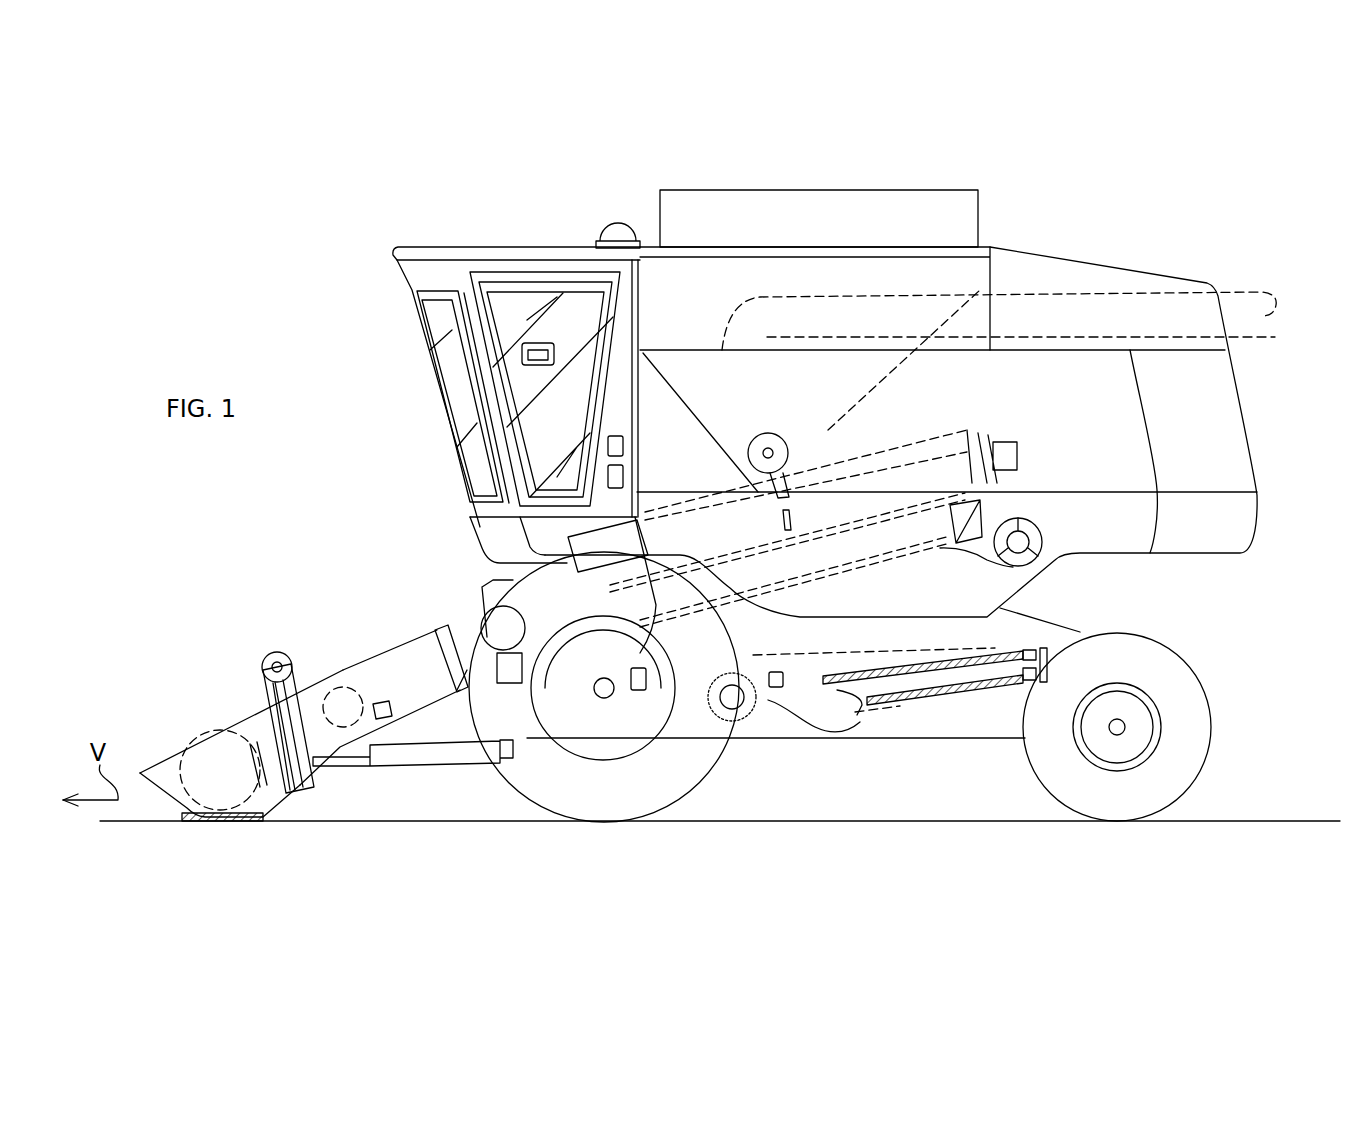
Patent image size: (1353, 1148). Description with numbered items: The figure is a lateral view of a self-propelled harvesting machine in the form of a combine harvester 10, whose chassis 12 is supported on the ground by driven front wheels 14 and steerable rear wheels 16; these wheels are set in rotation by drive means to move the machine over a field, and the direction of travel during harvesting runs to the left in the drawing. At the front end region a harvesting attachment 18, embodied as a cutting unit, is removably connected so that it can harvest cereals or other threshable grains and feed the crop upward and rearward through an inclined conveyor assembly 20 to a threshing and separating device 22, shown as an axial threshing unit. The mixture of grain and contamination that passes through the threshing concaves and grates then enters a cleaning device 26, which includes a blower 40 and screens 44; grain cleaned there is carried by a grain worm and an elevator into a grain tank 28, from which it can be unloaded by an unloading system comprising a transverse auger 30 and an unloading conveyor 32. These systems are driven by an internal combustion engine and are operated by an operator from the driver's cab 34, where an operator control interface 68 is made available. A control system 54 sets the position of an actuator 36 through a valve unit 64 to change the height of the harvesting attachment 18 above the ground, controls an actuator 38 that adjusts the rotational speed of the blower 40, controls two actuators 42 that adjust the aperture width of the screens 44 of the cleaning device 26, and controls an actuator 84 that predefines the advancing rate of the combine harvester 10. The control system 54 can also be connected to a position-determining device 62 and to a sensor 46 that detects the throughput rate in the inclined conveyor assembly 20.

The combine harvester 10 is at (1116, 206).
The chassis 12 is at (890, 740).
The front wheels 14 is at (723, 750).
The rear wheels 16 is at (1160, 777).
The harvesting attachment 18 is at (212, 710).
The inclined conveyor assembly 20 is at (418, 633).
The threshing and separating device 22 is at (878, 443).
The cleaning device 26 is at (917, 712).
The grain tank 28 is at (663, 318).
The transverse auger 30 is at (774, 452).
The unloading conveyor 32 is at (1173, 313).
The driver's cab 34 is at (517, 243).
The actuator 36 is at (400, 757).
The actuator 38 is at (777, 672).
The blower 40 is at (770, 703).
The actuators 42 is at (1037, 660).
The screens 44 is at (945, 657).
The sensor 46 is at (377, 703).
The control system 54 is at (623, 445).
The position-determining device 62 is at (618, 226).
The valve unit 64 is at (623, 476).
The operator control interface 68 is at (555, 348).
The actuator 84 is at (645, 692).